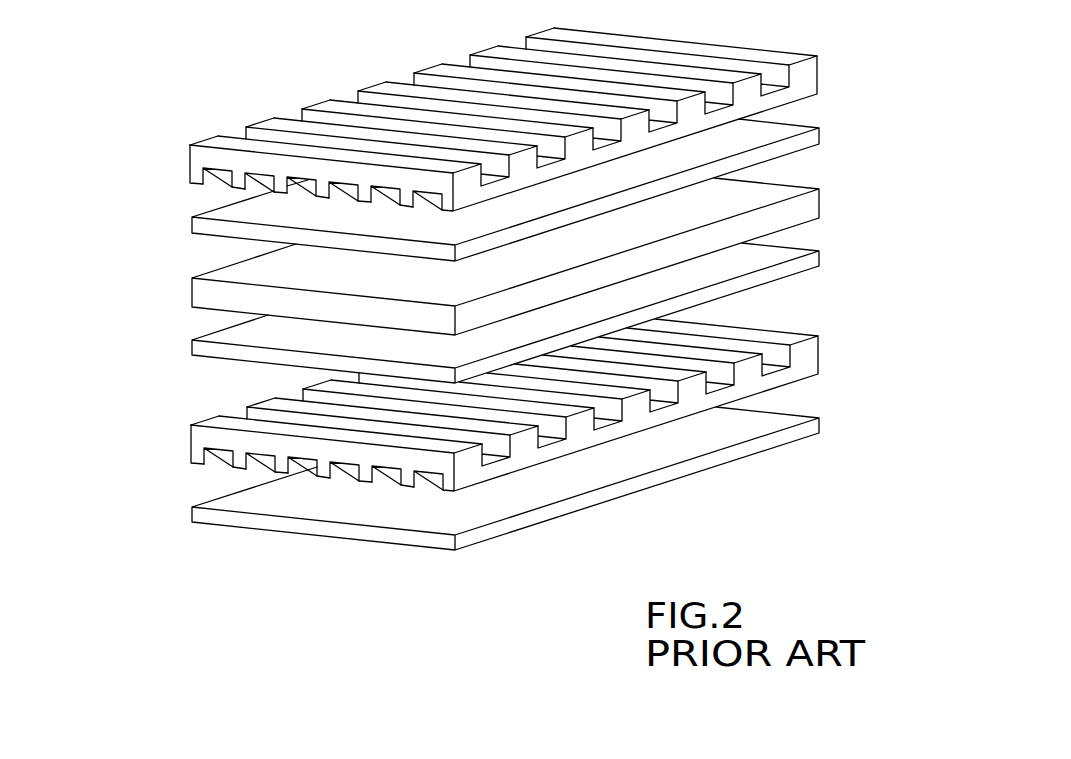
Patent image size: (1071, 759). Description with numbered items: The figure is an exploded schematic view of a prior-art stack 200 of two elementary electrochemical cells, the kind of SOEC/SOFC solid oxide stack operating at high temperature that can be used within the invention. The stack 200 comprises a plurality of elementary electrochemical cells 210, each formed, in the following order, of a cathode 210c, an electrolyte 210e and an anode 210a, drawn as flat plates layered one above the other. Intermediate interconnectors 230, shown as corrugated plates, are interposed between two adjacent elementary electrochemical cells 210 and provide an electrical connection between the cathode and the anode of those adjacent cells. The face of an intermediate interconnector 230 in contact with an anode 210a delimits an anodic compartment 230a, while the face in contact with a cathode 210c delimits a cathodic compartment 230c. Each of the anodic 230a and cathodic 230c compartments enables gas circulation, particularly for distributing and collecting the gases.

The solid oxide stack 200 is at (93, 136).
The elementary electrochemical cell 210 is at (172, 215).
The anode 210a is at (818, 258).
The cathode 210c is at (818, 422).
The electrolyte 210e is at (818, 194).
The intermediate interconnector 230 is at (818, 340).
The anodic compartment 230a is at (220, 407).
The cathodic compartment 230c is at (220, 470).